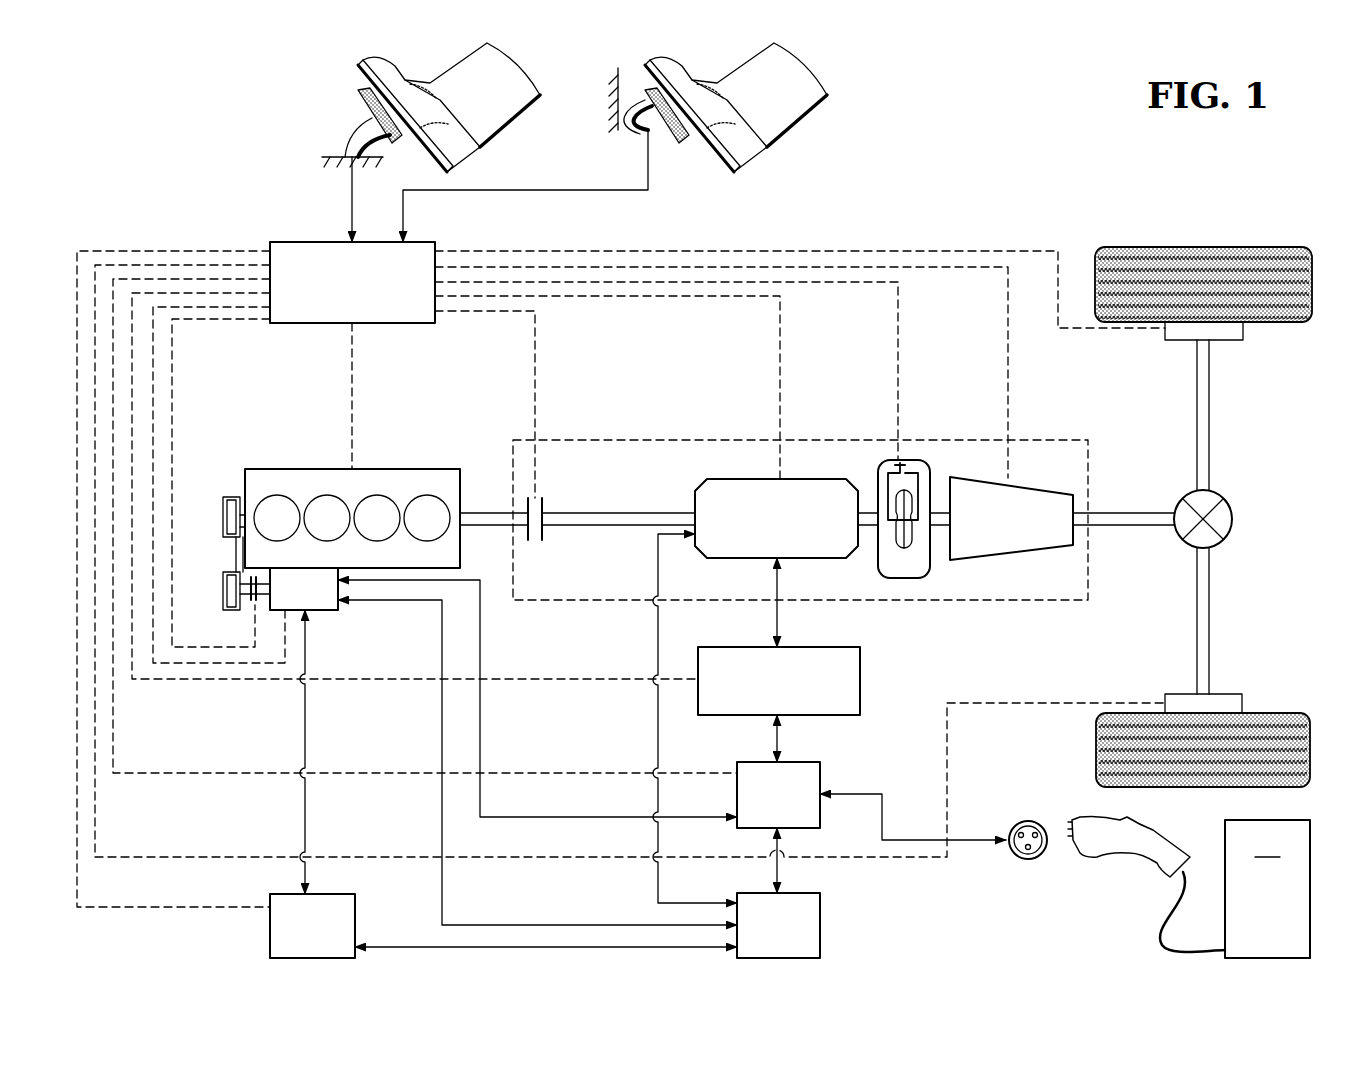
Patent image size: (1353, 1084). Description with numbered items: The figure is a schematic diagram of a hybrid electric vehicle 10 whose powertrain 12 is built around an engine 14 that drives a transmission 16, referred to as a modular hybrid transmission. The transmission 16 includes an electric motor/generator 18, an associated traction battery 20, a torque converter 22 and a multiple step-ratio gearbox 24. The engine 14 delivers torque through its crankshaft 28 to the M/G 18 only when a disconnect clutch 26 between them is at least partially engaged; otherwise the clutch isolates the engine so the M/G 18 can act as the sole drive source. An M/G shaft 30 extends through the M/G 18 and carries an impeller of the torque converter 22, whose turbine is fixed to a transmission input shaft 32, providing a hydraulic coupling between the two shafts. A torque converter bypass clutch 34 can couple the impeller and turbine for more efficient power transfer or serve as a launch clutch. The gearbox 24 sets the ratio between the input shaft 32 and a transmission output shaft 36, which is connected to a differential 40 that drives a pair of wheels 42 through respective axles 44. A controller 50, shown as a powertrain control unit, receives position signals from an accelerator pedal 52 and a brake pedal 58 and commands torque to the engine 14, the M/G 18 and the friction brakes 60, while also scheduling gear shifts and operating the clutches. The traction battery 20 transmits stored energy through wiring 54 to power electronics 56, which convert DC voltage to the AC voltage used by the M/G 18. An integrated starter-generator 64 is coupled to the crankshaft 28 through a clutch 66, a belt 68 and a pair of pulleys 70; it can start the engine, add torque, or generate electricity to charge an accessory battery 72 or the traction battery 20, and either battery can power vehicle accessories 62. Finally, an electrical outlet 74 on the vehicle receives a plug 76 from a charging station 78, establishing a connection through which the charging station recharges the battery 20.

The hybrid electric vehicle 10 is at (900, 155).
The powertrain 12 is at (412, 718).
The engine 14 is at (302, 469).
The transmission 16 is at (853, 440).
The electric motor/generator (M/G) 18 is at (745, 479).
The traction battery 20 is at (820, 778).
The torque converter 22 is at (905, 578).
The gearbox 24 is at (1010, 560).
The disconnect clutch 26 is at (545, 505).
The crankshaft 28 is at (243, 515).
The M/G shaft 30 is at (645, 513).
The transmission input shaft 32 is at (939, 513).
The torque converter bypass clutch 34 is at (902, 462).
The transmission output shaft 36 is at (1113, 513).
The differential 40 is at (1233, 519).
The wheels 42 is at (1205, 247).
The axles 44 is at (1211, 408).
The controller 50 is at (312, 242).
The accelerator pedal 52 is at (358, 107).
The wiring 54 is at (776, 740).
The power electronics 56 is at (860, 680).
The brake pedal 58 is at (708, 168).
The friction brakes 60 is at (1243, 330).
The vehicle accessories 62 is at (820, 928).
The integrated starter-generator (ISG) 64 is at (322, 612).
The clutch 66 is at (254, 605).
The belt 68 is at (224, 560).
The pulleys 70 is at (223, 513).
The accessory battery 72 is at (355, 915).
The electrical outlet 74 is at (1027, 821).
The plug 76 is at (1163, 830).
The charging station 78 is at (1267, 889).